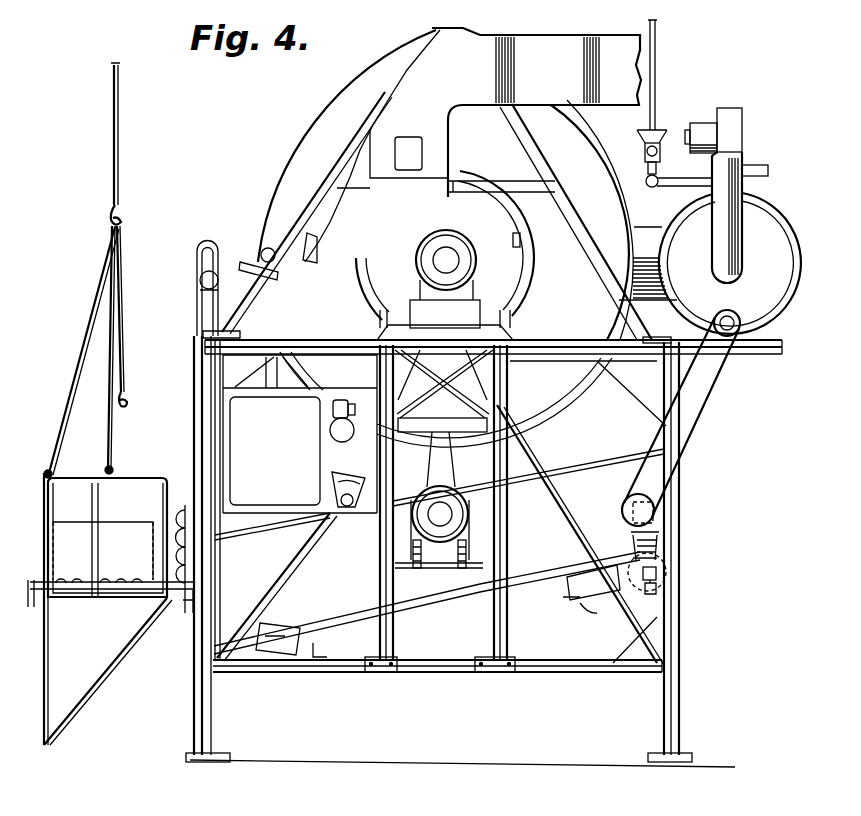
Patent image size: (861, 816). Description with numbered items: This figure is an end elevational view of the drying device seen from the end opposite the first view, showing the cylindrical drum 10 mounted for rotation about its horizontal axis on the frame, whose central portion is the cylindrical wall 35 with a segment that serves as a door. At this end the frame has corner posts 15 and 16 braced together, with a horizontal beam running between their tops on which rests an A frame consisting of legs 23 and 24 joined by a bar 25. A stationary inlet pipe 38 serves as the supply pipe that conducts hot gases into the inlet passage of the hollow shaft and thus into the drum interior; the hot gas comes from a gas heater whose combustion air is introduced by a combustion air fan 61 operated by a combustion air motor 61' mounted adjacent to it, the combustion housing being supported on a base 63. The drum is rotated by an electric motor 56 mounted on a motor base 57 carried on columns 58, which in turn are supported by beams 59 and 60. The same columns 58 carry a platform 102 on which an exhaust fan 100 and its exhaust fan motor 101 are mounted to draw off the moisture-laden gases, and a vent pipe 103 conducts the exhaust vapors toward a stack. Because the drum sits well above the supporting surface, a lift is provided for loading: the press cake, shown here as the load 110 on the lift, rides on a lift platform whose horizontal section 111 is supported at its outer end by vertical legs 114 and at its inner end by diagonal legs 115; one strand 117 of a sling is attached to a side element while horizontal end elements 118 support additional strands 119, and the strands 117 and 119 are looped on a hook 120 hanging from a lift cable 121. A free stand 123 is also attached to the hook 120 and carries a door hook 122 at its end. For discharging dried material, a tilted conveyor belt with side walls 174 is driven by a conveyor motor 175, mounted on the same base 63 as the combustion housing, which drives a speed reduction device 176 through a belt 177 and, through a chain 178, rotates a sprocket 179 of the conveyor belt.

The cylindrical drum 10 is at (262, 191).
The corner post 15 is at (214, 712).
The corner post 16 is at (673, 718).
The leg of A frame 23 is at (323, 200).
The leg of A frame 24 is at (545, 160).
The bar 25 is at (517, 182).
The cylindrical wall 35 is at (258, 222).
The inlet pipe 38 is at (645, 228).
The electric motor 56 is at (428, 498).
The motor base 57 is at (397, 569).
The columns 58 is at (386, 638).
The beam 59 is at (538, 672).
The beam 60 is at (537, 354).
The combustion air fan 61 is at (730, 207).
The combustion air motor 61' is at (701, 116).
The base 63 is at (767, 354).
The exhaust fan 100 is at (512, 269).
The exhaust fan motor 101 is at (423, 263).
The platform 102 is at (394, 352).
The vent pipe 103 is at (565, 38).
The load in basket 110 is at (133, 522).
The horizontal section 111 is at (128, 598).
The vertical legs 114 is at (48, 625).
The diagonal legs 115 is at (147, 623).
The strand of sling 117 is at (56, 440).
The horizontal end elements 118 is at (153, 478).
The strands of sling 119 is at (114, 440).
The hook 120 is at (115, 207).
The lift cable 121 is at (119, 172).
The door hook 122 is at (121, 401).
The free stand 123 is at (123, 368).
The side walls 174 is at (585, 476).
The conveyor motor 175 is at (745, 330).
The speed reduction device 176 is at (657, 517).
The belt 177 is at (690, 440).
The chain 178 is at (631, 541).
The sprocket 179 is at (660, 552).